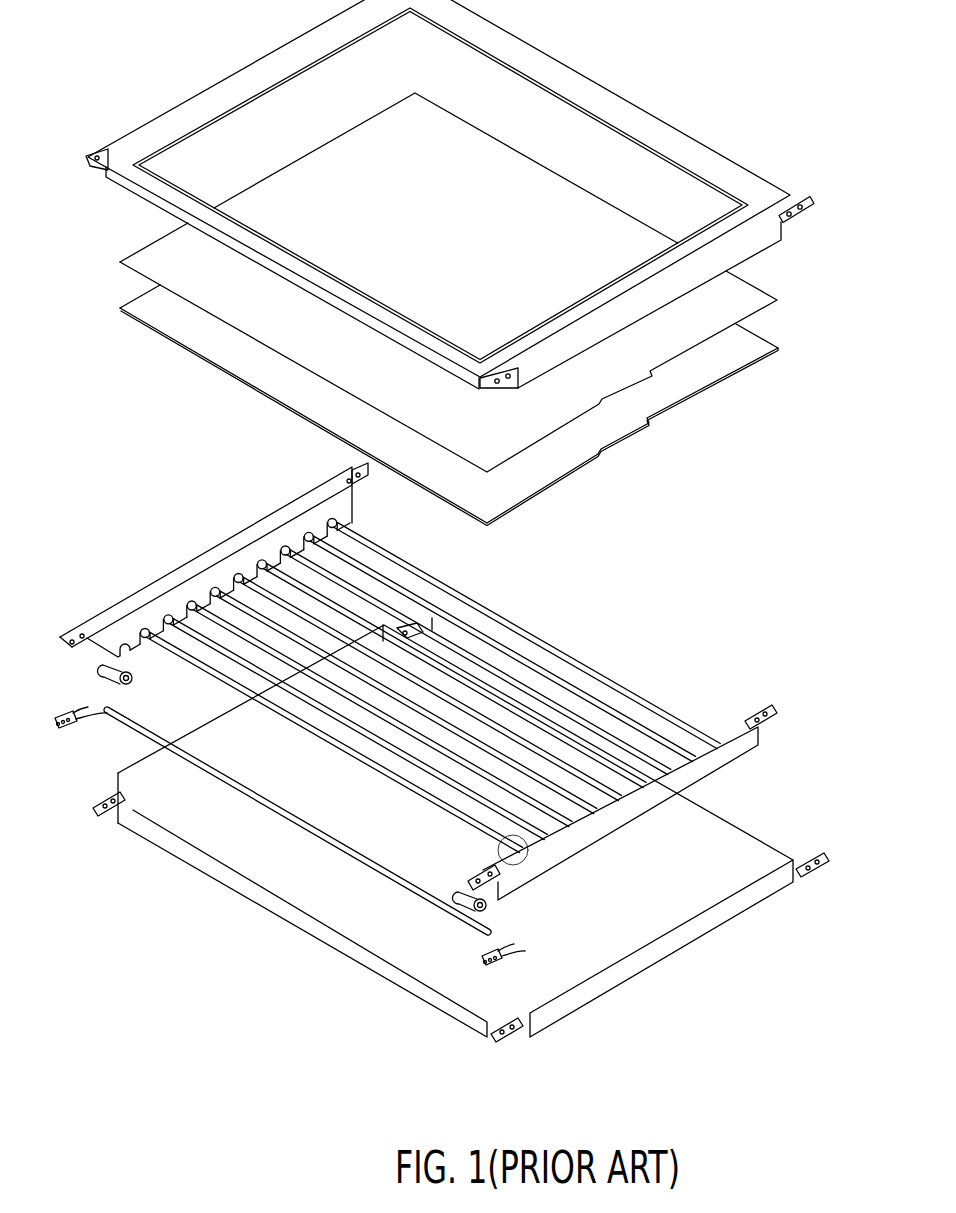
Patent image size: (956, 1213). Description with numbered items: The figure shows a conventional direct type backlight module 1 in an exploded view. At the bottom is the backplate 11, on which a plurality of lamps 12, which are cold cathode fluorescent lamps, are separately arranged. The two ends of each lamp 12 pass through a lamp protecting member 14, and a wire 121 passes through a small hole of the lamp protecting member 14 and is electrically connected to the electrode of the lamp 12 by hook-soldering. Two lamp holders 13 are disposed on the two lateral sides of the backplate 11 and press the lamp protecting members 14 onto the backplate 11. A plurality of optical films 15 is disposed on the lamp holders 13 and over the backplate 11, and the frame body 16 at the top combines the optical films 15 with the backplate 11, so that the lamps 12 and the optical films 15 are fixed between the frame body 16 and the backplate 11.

The backlight module 1 is at (110, 47).
The backplate 11 is at (740, 907).
The lamp 12 is at (597, 677).
The wire 121 is at (88, 725).
The lamp holder 13 is at (748, 744).
The lamp protecting member 14 is at (103, 672).
The optical film 15 is at (790, 297).
The frame body 16 is at (673, 142).